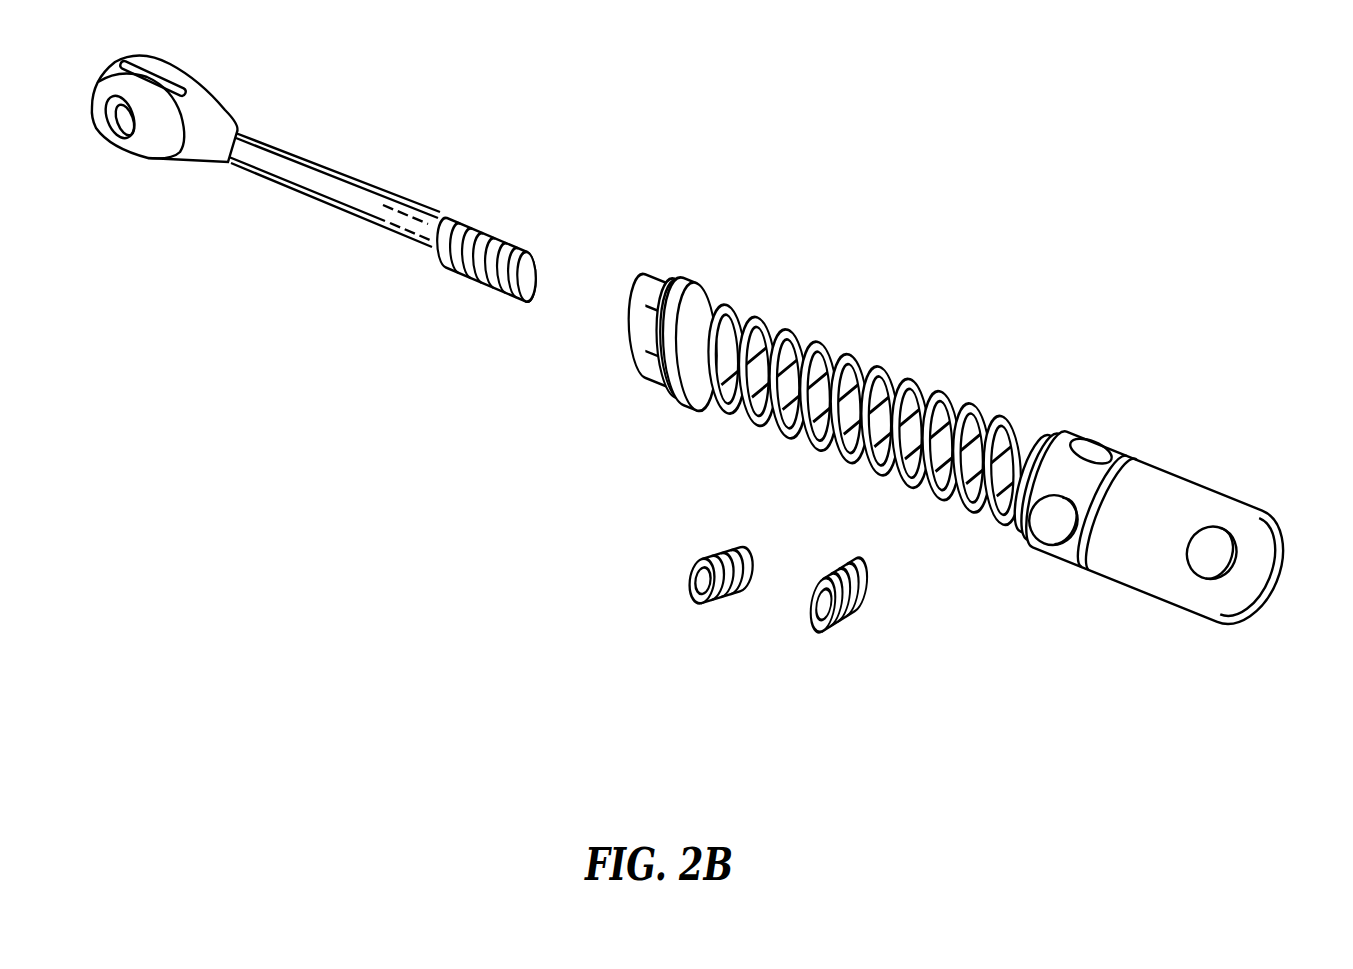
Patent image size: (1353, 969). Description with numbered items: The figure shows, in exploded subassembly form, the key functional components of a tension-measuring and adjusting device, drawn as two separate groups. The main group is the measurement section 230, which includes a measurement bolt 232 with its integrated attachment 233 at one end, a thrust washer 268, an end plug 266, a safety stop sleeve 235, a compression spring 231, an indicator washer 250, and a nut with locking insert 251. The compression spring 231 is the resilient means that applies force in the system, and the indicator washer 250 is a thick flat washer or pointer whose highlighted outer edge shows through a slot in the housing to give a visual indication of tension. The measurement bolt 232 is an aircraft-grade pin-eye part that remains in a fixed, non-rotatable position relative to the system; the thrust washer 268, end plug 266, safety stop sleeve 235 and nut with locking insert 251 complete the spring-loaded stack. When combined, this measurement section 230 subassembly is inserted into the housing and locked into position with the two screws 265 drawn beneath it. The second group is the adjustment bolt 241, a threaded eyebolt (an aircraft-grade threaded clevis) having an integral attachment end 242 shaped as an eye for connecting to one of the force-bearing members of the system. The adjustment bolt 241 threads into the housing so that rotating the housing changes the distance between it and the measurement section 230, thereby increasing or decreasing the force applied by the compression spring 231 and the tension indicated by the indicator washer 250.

The measurement section 230 is at (918, 432).
The compression spring 231 is at (838, 350).
The measurement bolt 232 is at (1113, 527).
The integrated attachment 233 is at (1203, 573).
The safety stop sleeve 235 is at (907, 397).
The adjustment bolt 241 is at (253, 165).
The attachment end 242 is at (118, 158).
The indicator washer 250 is at (656, 392).
The nut with locking insert 251 is at (656, 293).
The screws 265 is at (813, 623).
The end plug 266 is at (1073, 550).
The thrust washer 268 is at (705, 290).